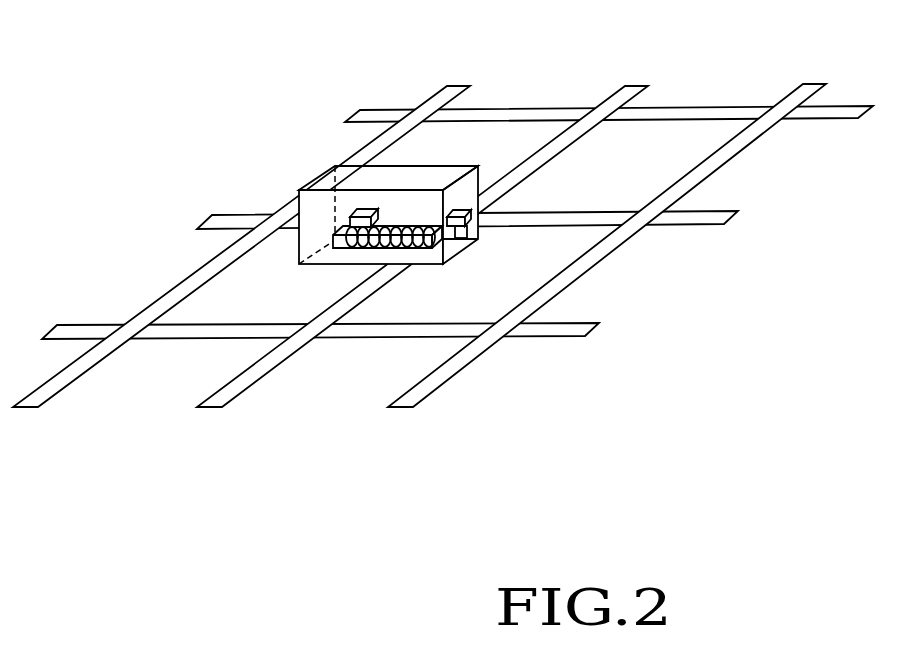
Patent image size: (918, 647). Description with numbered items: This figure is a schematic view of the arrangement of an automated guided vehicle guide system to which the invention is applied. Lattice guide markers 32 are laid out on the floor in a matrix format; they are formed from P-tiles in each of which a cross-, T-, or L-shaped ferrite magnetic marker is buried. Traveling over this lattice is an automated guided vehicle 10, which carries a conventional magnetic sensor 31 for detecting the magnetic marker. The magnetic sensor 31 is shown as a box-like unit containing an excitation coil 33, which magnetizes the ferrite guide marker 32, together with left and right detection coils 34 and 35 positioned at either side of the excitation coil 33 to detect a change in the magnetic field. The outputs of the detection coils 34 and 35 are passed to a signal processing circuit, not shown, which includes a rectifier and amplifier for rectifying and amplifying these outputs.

The automated guided vehicle 10 is at (350, 212).
The magnetic sensor 31 is at (441, 172).
The lattice guide markers 32 is at (644, 86).
The excitation coil 33 is at (344, 244).
The detection coil 34 is at (367, 210).
The detection coil 35 is at (466, 240).